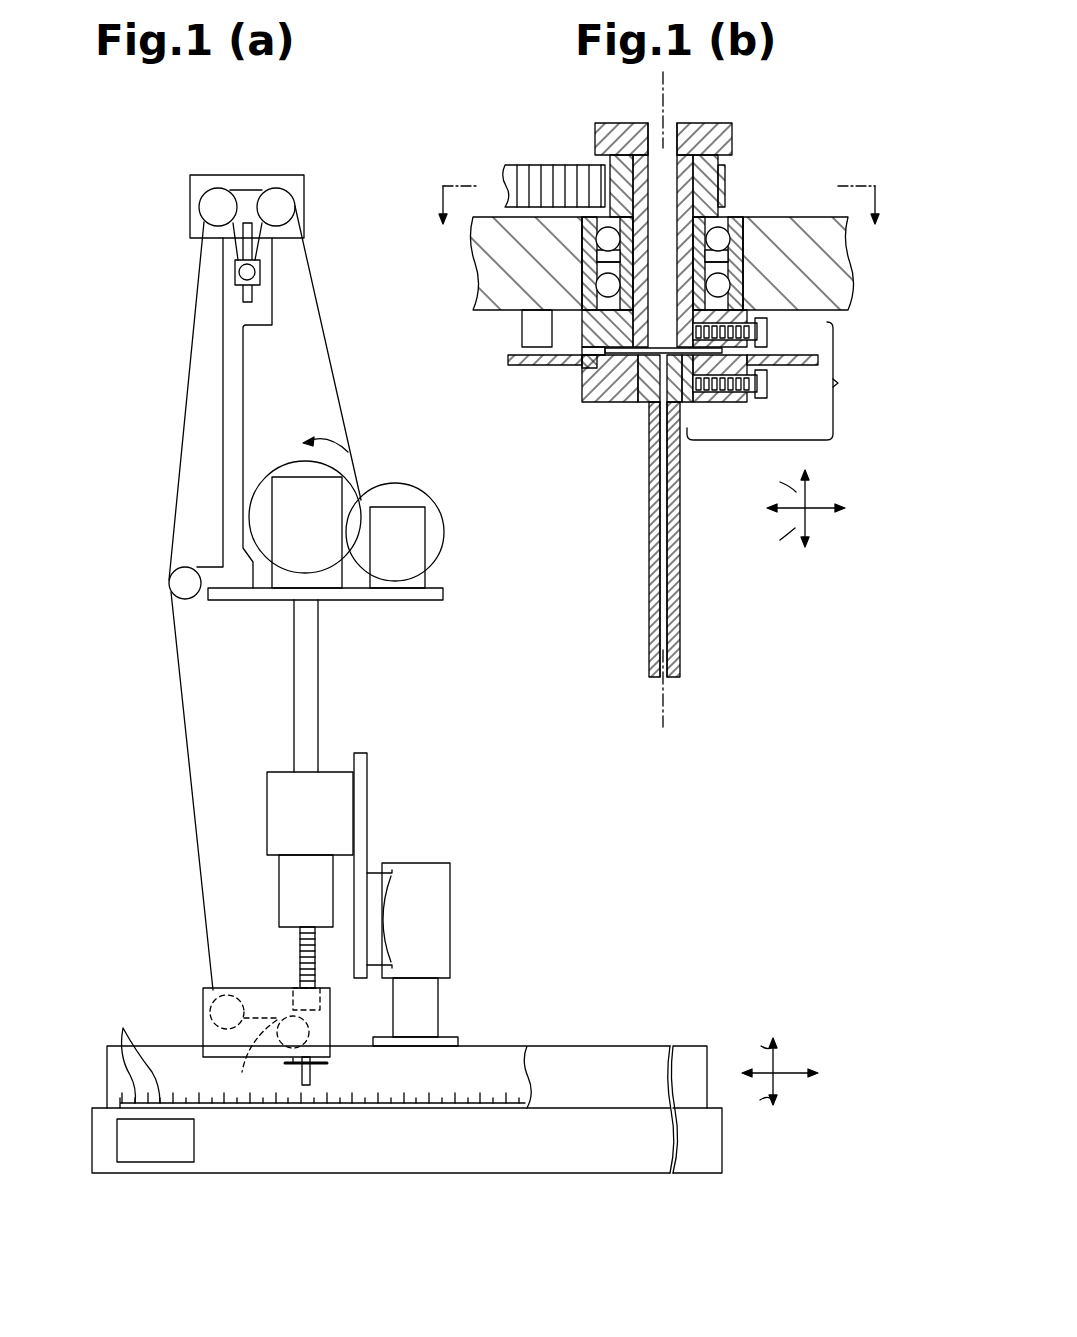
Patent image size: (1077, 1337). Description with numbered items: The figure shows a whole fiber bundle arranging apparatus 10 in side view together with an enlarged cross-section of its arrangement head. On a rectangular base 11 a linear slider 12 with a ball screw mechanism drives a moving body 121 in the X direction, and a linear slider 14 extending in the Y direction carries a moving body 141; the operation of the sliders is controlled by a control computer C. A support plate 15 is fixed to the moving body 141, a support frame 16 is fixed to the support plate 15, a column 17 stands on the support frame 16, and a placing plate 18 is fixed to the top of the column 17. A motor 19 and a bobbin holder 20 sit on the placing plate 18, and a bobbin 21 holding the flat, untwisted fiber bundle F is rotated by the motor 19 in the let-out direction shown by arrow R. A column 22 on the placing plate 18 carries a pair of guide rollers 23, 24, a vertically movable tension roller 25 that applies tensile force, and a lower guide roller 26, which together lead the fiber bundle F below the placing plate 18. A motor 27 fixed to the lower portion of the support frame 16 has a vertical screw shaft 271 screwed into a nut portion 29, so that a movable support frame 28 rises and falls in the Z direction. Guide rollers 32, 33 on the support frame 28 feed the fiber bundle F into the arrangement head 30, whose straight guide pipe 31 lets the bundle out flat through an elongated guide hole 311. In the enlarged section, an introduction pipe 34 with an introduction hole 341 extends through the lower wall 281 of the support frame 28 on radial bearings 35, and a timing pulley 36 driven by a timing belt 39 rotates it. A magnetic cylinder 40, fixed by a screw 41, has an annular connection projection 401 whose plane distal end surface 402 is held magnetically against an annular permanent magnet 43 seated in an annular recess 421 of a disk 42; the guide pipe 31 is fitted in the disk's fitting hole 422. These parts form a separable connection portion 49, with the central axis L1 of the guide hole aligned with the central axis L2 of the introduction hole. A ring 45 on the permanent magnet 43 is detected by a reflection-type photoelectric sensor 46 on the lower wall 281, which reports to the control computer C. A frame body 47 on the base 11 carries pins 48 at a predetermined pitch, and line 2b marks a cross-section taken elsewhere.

In FIG. 1A, the fiber bundle arranging apparatus 10 is at (136, 172).
In FIG. 1A, the base 11 is at (407, 1169).
In FIG. 1A, the linear slider 12 is at (111, 1062).
In FIG. 1A, the moving body 121 is at (440, 1041).
In FIG. 1A, the linear slider 14 is at (439, 920).
In FIG. 1A, the moving body 141 is at (385, 905).
In FIG. 1A, the support plate 15 is at (367, 806).
In FIG. 1A, the support frame 16 is at (337, 777).
In FIG. 1A, the column 17 is at (319, 657).
In FIG. 1A, the placing plate 18 is at (446, 600).
In FIG. 1A, the motor 19 is at (412, 497).
In FIG. 1A, the bobbin holder 20 is at (334, 502).
In FIG. 1A, the bobbin 21 is at (293, 463).
In FIG. 1A, the column 22 is at (240, 385).
In FIG. 1A, the guide roller 23 is at (293, 203).
In FIG. 1A, the guide roller 24 is at (204, 204).
In FIG. 1A, the tension roller 25 is at (243, 272).
In FIG. 1A, the guide roller 26 is at (170, 584).
In FIG. 1A, the motor 27 is at (283, 890).
In FIG. 1A, the screw shaft 271 is at (300, 958).
In FIG. 1A, the support frame 28 is at (262, 1026).
In FIG. 1B, the lower wall 281 is at (480, 272).
In FIG. 1A, the nut portion 29 is at (322, 1004).
In FIG. 1A, the arrangement head 30 is at (299, 1068).
In FIG. 1B, the arrangement head 30 is at (742, 573).
In FIG. 1A, the guide pipe 31 is at (313, 1076).
In FIG. 1B, the guide pipe 31 is at (689, 539).
In FIG. 1B, the guide hole 311 is at (664, 528).
In FIG. 1A, the guide roller 32 is at (210, 1012).
In FIG. 1A, the guide roller 33 is at (255, 1053).
In FIG. 1B, the introduction pipe 34 is at (692, 216).
In FIG. 1B, the introduction hole 341 is at (673, 125).
In FIG. 1B, the radial bearing 35 is at (725, 245).
In FIG. 1B, the timing pulley 36 is at (710, 190).
In FIG. 1B, the timing belt 39 is at (535, 170).
In FIG. 1B, the magnetic cylinder 40 is at (684, 403).
In FIG. 1B, the connection projection 401 is at (575, 350).
In FIG. 1B, the distal end surface 402 is at (582, 366).
In FIG. 1B, the screw 41 is at (767, 332).
In FIG. 1B, the disk 42 is at (720, 394).
In FIG. 1B, the annular recess 421 is at (599, 402).
In FIG. 1B, the fitting hole 422 is at (646, 403).
In FIG. 1B, the permanent magnet 43 is at (740, 368).
In FIG. 1B, the ring 45 is at (510, 363).
In FIG. 1B, the photoelectric sensor 46 is at (522, 318).
In FIG. 1A, the frame body 47 is at (118, 1104).
In FIG. 1A, the pin 48 is at (132, 1049).
In FIG. 1B, the connection portion 49 is at (783, 381).
In FIG. 1A, the control computer C is at (196, 1137).
In FIG. 1A, the fiber bundle F is at (336, 378).
In FIG. 1A, the rotation direction R is at (335, 425).
In FIG. 1B, the central axis L1 is at (668, 702).
In FIG. 1B, the central axis L2 is at (660, 86).
In FIG. 1B, the section line 2b is at (659, 222).